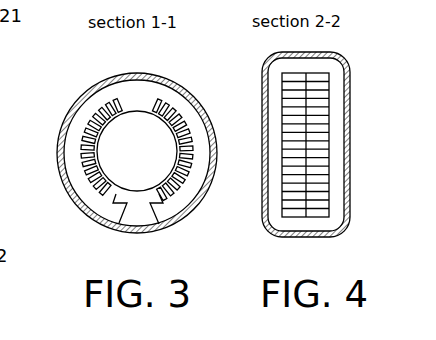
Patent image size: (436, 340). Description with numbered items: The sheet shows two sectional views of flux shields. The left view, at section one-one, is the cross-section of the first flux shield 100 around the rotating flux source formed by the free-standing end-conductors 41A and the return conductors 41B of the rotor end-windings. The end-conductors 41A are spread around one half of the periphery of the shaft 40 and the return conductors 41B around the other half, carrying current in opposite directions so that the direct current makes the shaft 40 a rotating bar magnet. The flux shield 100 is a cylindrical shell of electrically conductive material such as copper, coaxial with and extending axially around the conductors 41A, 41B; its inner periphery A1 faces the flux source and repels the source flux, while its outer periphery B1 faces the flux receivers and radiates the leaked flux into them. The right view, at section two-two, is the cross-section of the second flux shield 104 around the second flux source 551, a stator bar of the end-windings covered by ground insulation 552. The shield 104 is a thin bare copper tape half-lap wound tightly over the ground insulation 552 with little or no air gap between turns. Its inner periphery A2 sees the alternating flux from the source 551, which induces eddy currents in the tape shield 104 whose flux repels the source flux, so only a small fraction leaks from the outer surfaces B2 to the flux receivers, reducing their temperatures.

In FIG. 3, the first flux shield 100 is at (122, 73).
In FIG. 3, the shaft 40 is at (137, 112).
In FIG. 3, the free-standing end-conductors 41A is at (120, 222).
In FIG. 3, the return conductors 41B is at (157, 222).
In FIG. 3, the inner periphery of the first flux shield A1 is at (64, 141).
In FIG. 3, the outer periphery of the first flux shield B1 is at (75, 112).
In FIG. 4, the second flux shield 104 is at (263, 99).
In FIG. 4, the ground insulation 552 is at (275, 128).
In FIG. 4, the second flux source 551 is at (292, 185).
In FIG. 4, the inner periphery of the second flux shield A2 is at (347, 112).
In FIG. 4, the outer surfaces of the second flux shield B2 is at (348, 86).